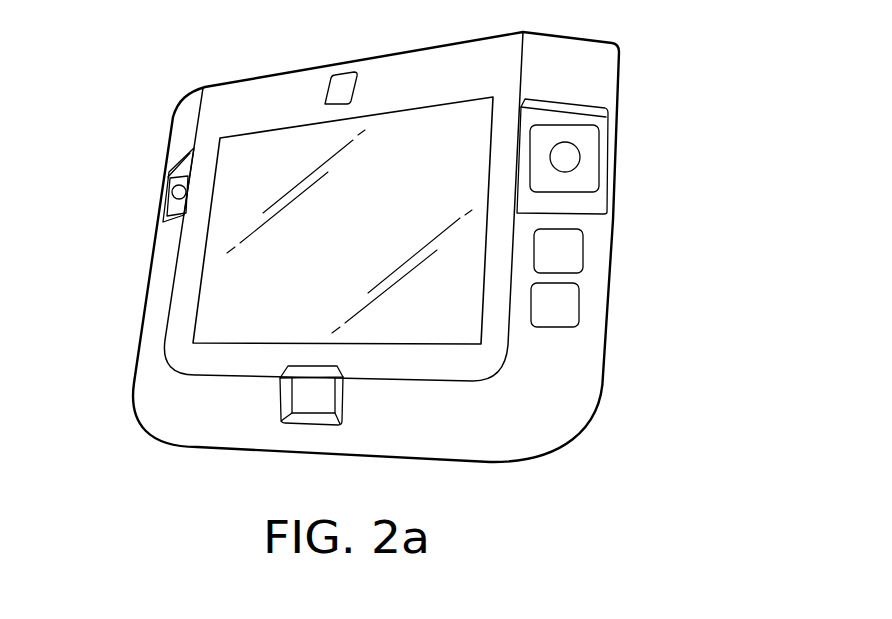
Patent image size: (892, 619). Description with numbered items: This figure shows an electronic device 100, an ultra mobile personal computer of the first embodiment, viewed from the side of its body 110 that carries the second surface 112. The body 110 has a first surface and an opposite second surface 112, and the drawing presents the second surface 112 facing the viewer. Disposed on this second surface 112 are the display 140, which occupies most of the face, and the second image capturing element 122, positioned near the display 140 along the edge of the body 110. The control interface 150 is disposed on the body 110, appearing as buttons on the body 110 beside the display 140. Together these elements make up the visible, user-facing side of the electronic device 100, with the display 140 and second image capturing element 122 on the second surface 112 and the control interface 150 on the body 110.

The electronic device 100 is at (102, 62).
The body 110 is at (610, 222).
The second surface 112 is at (537, 403).
The second image capturing element 122 is at (340, 88).
The display 140 is at (222, 288).
The control interface 150 is at (560, 260).